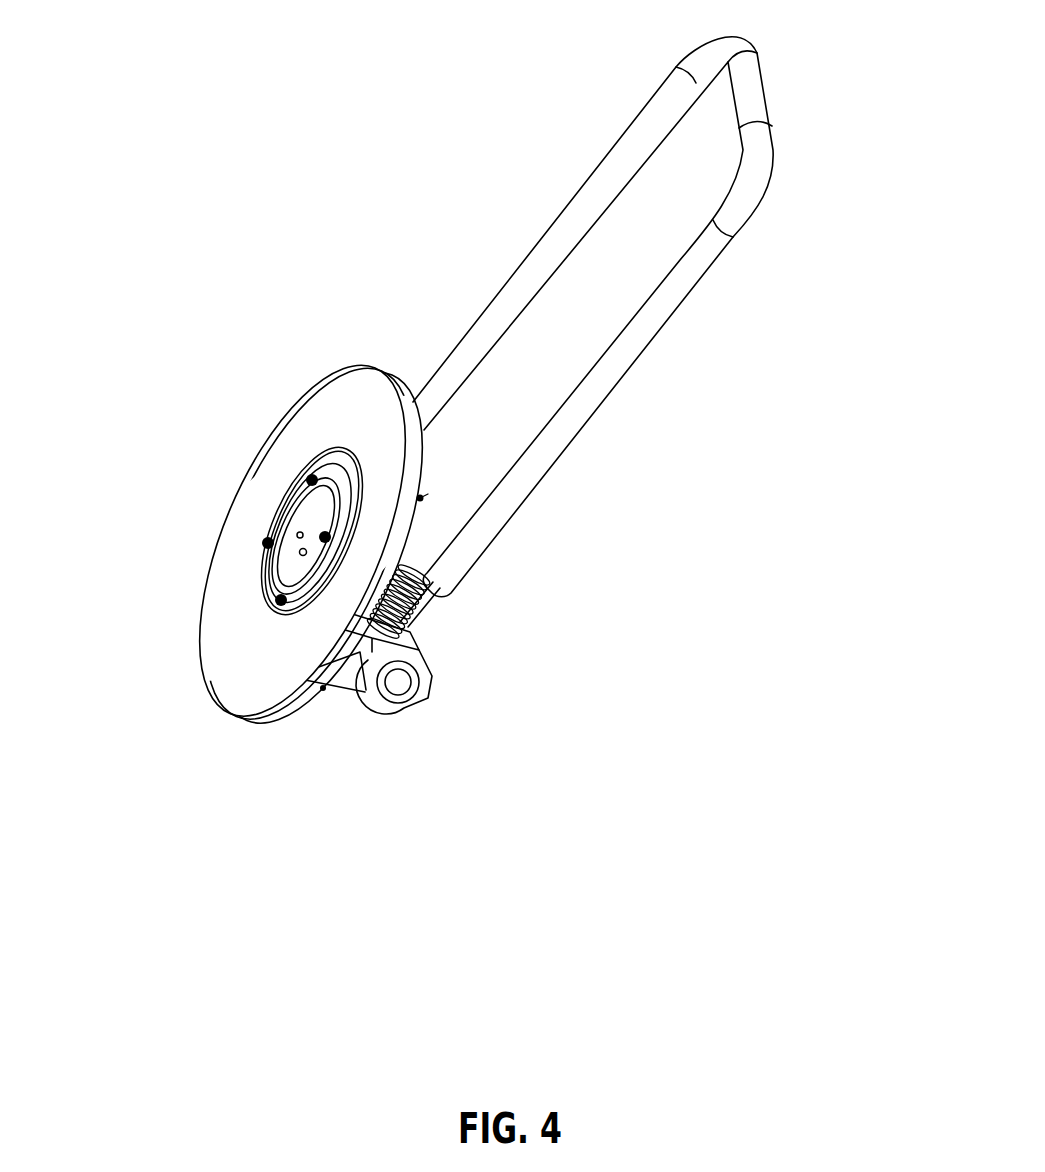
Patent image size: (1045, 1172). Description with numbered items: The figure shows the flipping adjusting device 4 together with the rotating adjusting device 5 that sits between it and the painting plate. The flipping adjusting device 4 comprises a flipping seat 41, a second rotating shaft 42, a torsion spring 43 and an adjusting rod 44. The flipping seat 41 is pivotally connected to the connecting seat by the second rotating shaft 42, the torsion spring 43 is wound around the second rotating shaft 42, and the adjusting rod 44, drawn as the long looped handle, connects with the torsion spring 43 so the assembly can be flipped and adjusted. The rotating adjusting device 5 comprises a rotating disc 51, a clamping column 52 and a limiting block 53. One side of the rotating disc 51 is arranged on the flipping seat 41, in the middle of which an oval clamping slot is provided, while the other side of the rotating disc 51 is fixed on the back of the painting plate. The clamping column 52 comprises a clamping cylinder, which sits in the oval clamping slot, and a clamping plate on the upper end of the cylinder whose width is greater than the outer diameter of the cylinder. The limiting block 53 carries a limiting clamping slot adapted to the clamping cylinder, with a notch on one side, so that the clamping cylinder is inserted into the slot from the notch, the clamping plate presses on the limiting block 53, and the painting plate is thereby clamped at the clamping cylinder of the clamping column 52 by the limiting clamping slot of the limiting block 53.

The flipping adjusting device 4 is at (440, 858).
The flipping seat 41 is at (300, 698).
The second rotating shaft 42 is at (400, 682).
The torsion spring 43 is at (420, 613).
The adjusting rod 44 is at (522, 473).
The rotating adjusting device 5 is at (127, 253).
The rotating disc 51 is at (362, 427).
The clamping column 52 is at (307, 532).
The limiting block 53 is at (328, 485).